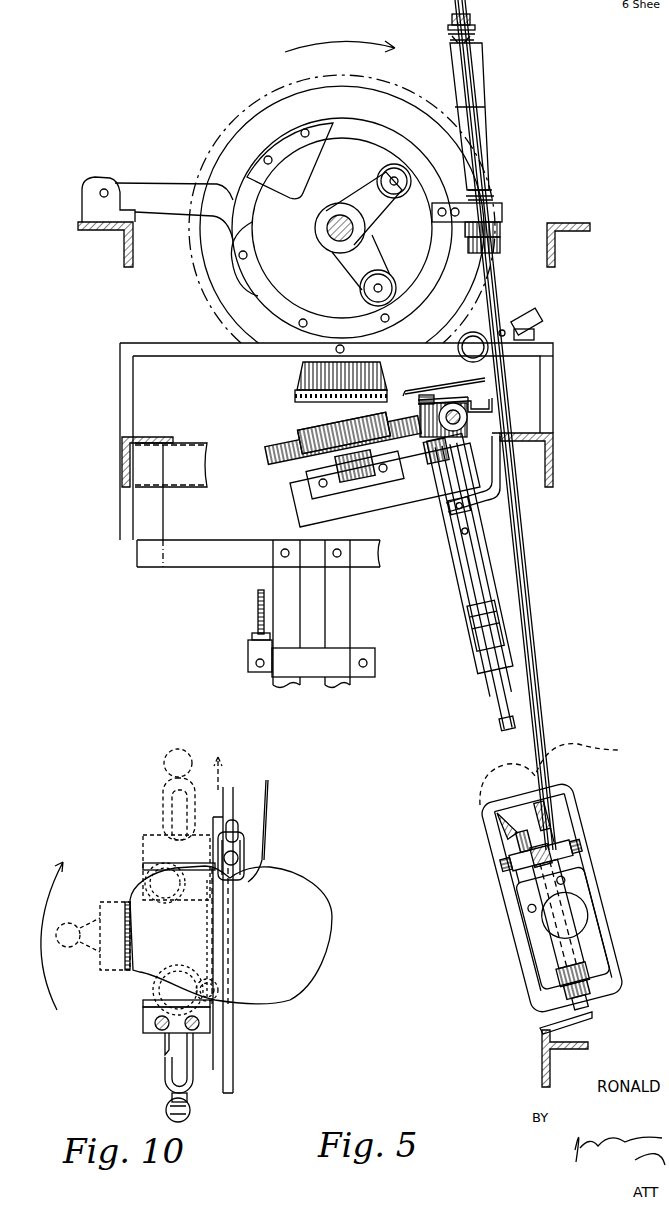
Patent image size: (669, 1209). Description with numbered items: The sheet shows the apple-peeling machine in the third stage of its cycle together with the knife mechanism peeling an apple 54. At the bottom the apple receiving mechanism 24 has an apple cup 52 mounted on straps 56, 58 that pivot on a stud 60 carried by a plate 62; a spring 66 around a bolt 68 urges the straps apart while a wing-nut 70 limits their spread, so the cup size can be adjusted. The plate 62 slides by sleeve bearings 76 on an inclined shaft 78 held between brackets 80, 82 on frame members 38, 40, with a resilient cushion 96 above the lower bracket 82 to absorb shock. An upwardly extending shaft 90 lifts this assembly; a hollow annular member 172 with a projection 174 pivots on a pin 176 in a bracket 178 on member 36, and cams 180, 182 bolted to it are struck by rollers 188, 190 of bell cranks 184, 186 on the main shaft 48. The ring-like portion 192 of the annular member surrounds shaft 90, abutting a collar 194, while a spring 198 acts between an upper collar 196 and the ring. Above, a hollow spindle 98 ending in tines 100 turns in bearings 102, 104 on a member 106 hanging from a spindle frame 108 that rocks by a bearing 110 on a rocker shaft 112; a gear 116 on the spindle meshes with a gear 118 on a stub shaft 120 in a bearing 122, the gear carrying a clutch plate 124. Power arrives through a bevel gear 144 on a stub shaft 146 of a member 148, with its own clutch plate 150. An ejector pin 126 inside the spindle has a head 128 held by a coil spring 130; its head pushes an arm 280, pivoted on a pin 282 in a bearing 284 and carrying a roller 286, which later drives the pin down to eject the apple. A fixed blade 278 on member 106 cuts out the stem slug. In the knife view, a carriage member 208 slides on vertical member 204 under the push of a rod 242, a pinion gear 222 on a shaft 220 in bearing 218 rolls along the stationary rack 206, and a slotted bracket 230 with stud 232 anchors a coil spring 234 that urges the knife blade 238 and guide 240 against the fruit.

In FIG. 5, the apple receiving mechanism 24 is at (503, 968).
In FIG. 5, the upper transverse horizontal member 36 is at (123, 252).
In FIG. 5, the middle transverse horizontal member 38 is at (122, 470).
In FIG. 5, the lower transverse horizontal member 40 is at (572, 1048).
In FIG. 5, the main shaft 48 is at (328, 229).
In FIG. 5, the apple cup 52 is at (565, 793).
In FIG. 5, the apple 54 is at (620, 750).
In FIG. 10, the apple 54 is at (296, 878).
In FIG. 5, the strap 56 is at (568, 820).
In FIG. 5, the strap 58 is at (508, 860).
In FIG. 5, the stud 60 is at (530, 900).
In FIG. 5, the plate 62 is at (590, 930).
In FIG. 5, the spring 66 is at (592, 858).
In FIG. 5, the bolt 68 is at (522, 878).
In FIG. 5, the wing-nut 70 is at (578, 846).
In FIG. 5, the sleeve bearing 76 is at (540, 873).
In FIG. 5, the inclined shaft 78 is at (530, 838).
In FIG. 5, the bracket 80 is at (492, 494).
In FIG. 5, the bracket 82 is at (555, 1027).
In FIG. 5, the upwardly extending shaft 90 is at (531, 628).
In FIG. 5, the cushion 96 is at (585, 995).
In FIG. 5, the hollow spindle 98 is at (470, 560).
In FIG. 10, the hollow spindle 98 is at (243, 858).
In FIG. 5, the tines 100 is at (500, 712).
In FIG. 5, the bearing 102 is at (457, 440).
In FIG. 5, the bearing 104 is at (475, 633).
In FIG. 5, the member 106 is at (477, 548).
In FIG. 5, the spindle frame 108 is at (300, 512).
In FIG. 5, the bearing 110 is at (452, 403).
In FIG. 5, the rocker shaft 112 is at (478, 415).
In FIG. 5, the gear 116 is at (432, 460).
In FIG. 5, the second gear 118 is at (277, 461).
In FIG. 5, the stub shaft 120 is at (360, 490).
In FIG. 5, the bearing 122 is at (350, 478).
In FIG. 5, the clutch plate 124 is at (310, 433).
In FIG. 5, the ejector pin 126 is at (512, 736).
In FIG. 10, the ejector pin 126 is at (237, 830).
In FIG. 5, the enlarged head 128 is at (546, 366).
In FIG. 5, the coil spring 130 is at (430, 392).
In FIG. 5, the bevel gear 144 is at (300, 386).
In FIG. 5, the stub shaft 146 is at (340, 340).
In FIG. 5, the member 148 is at (192, 345).
In FIG. 5, the clutch plate 150 is at (303, 400).
In FIG. 5, the hollow annular member 172 is at (362, 125).
In FIG. 5, the horizontally extending projection 174 is at (186, 190).
In FIG. 5, the pin 176 is at (100, 193).
In FIG. 5, the bracket 178 is at (95, 210).
In FIG. 5, the cam 180 is at (290, 140).
In FIG. 5, the cam 182 is at (240, 279).
In FIG. 5, the bell crank 184 is at (366, 191).
In FIG. 5, the bell crank 186 is at (352, 268).
In FIG. 5, the roller 188 is at (382, 170).
In FIG. 5, the roller 190 is at (360, 292).
In FIG. 5, the ring-like portion 192 is at (500, 208).
In FIG. 5, the collar 194 is at (492, 240).
In FIG. 5, the second collar 196 is at (468, 22).
In FIG. 5, the spring 198 is at (470, 40).
In FIG. 10, the vertical member 204 is at (232, 805).
In FIG. 10, the stationary rack 206 is at (225, 920).
In FIG. 5, the horizontal member 208 is at (312, 665).
In FIG. 10, the bearing 218 is at (222, 990).
In FIG. 10, the shaft 220 is at (218, 977).
In FIG. 10, the pinion gear 222 is at (150, 995).
In FIG. 10, the slotted bracket 230 is at (165, 1068).
In FIG. 10, the stud 232 is at (172, 1098).
In FIG. 10, the coil spring 234 is at (168, 1112).
In FIG. 10, the knife blade 238 is at (143, 1002).
In FIG. 10, the guide 240 is at (143, 1027).
In FIG. 5, the rod 242 is at (257, 600).
In FIG. 10, the fixed blade 278 is at (270, 801).
In FIG. 5, the arm 280 is at (446, 386).
In FIG. 5, the pin 282 is at (541, 318).
In FIG. 5, the bearing 284 is at (536, 338).
In FIG. 5, the roller 286 is at (510, 299).